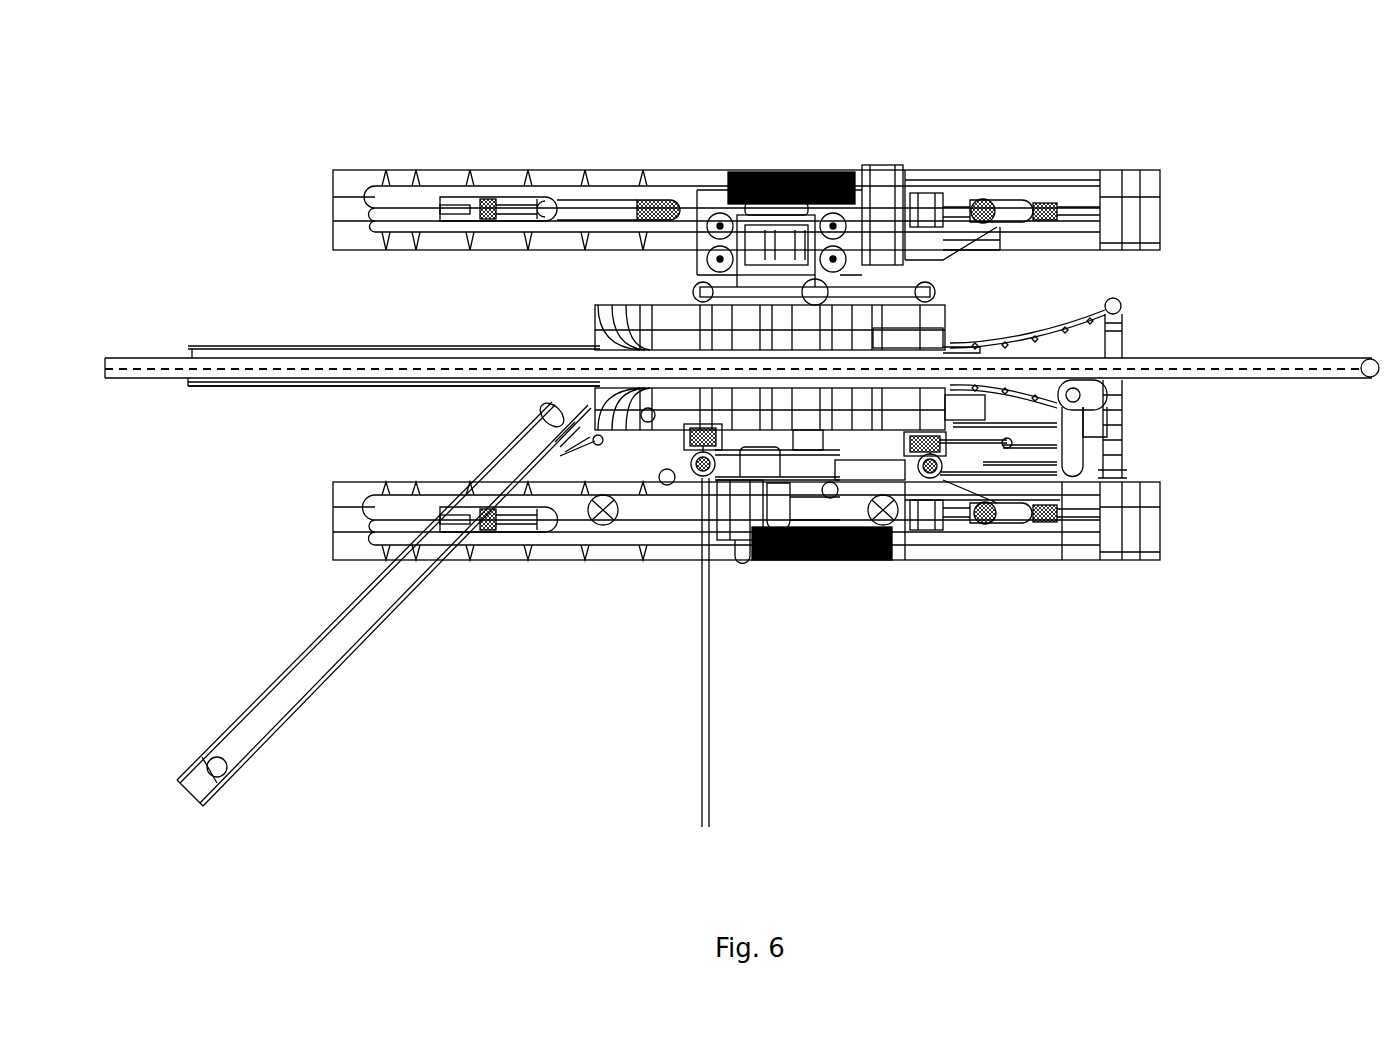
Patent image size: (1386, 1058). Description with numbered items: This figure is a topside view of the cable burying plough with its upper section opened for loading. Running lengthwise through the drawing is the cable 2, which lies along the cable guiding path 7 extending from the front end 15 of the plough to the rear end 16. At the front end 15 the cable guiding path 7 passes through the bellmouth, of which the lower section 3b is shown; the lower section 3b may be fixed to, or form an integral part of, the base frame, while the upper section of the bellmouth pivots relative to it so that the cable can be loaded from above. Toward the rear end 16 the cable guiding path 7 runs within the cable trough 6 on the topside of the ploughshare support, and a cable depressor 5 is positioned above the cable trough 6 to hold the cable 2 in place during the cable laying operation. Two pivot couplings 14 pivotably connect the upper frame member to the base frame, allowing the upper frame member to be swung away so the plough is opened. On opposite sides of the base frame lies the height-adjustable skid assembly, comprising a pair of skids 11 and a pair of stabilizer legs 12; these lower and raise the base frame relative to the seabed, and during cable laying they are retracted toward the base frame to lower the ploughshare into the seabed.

The cable 2 is at (1217, 360).
The lower section 3b is at (1118, 338).
The cable depressor 5 is at (308, 688).
The cable trough 6 is at (262, 353).
The cable guiding path 7 is at (158, 374).
The skids 11 is at (1050, 190).
The stabilizer legs 12 is at (412, 182).
The pivot couplings 14 is at (703, 436).
The front end 15 is at (1157, 412).
The rear end 16 is at (176, 403).